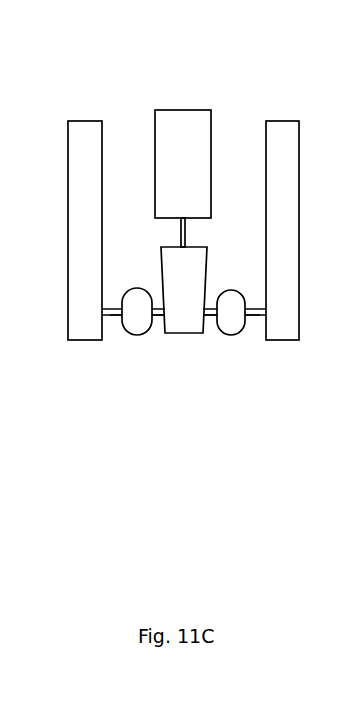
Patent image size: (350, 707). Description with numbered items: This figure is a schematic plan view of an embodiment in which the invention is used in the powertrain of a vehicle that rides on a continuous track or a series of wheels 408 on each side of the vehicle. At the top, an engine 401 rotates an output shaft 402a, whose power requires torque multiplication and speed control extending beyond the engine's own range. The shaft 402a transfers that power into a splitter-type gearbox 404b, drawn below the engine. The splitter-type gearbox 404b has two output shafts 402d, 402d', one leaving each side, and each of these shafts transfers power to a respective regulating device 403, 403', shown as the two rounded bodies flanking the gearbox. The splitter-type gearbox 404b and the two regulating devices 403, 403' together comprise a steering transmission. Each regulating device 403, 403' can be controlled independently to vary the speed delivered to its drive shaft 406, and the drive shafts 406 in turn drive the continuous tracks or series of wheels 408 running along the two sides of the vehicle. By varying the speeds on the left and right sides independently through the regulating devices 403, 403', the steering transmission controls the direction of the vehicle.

The engine 401 is at (188, 130).
The output shaft 402a is at (182, 233).
The output shaft of splitter-type gearbox 402d is at (145, 401).
The output shaft of splitter-type gearbox 402d' is at (238, 401).
The regulating device 403 is at (116, 392).
The regulating device 403' is at (251, 358).
The splitter-type gearbox 404b is at (210, 317).
The drive shaft 406 is at (110, 315).
The continuous track or series of wheels 408 is at (85, 130).